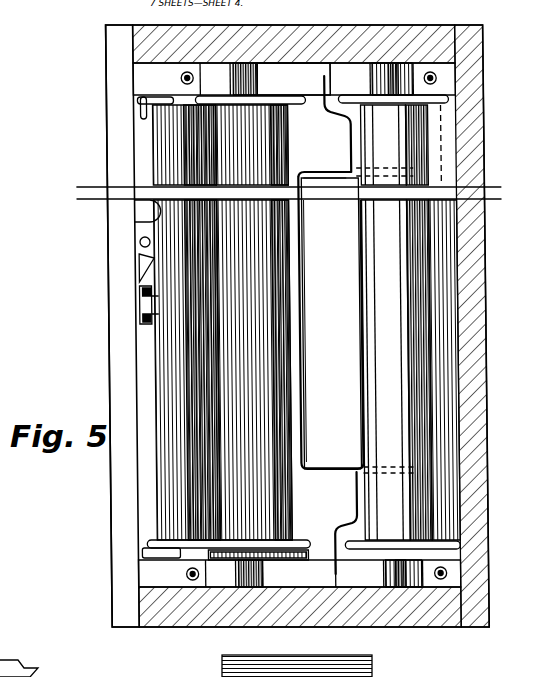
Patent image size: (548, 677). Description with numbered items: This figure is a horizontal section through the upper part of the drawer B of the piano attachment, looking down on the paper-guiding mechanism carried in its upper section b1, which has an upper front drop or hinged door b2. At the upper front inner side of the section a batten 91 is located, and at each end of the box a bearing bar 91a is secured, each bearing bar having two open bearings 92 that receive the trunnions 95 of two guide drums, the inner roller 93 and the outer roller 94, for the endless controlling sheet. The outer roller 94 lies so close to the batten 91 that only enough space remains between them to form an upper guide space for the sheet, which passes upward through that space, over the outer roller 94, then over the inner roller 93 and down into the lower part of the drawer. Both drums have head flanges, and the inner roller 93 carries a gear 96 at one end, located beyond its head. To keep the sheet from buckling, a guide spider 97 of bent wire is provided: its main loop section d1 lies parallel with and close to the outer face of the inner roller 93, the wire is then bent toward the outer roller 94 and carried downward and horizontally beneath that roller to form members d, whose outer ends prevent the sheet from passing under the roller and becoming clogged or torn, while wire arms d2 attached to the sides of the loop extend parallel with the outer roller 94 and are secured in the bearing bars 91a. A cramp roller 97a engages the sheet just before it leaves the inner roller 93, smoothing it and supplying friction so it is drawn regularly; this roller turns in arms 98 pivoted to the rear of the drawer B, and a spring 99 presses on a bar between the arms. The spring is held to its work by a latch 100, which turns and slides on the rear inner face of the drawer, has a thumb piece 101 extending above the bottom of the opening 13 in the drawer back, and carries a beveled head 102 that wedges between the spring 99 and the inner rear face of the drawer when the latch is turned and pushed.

The opening 13 is at (128, 490).
The drawer B is at (483, 308).
The batten 91 is at (432, 322).
The bearing bar 91a is at (296, 325).
The open bearings 92 is at (235, 80).
The inner roller 93 is at (253, 322).
The outer roller 94 is at (385, 322).
The trunnions 95 is at (250, 66).
The gear 96 is at (296, 546).
The guide spider 97 is at (300, 252).
The cramp roller 97a is at (186, 322).
The arms 98 is at (172, 100).
The spring 99 is at (156, 304).
The latch 100 is at (137, 240).
The thumb piece 101 is at (117, 212).
The head 102 is at (136, 268).
The members d is at (394, 466).
The main loop section d1 is at (300, 398).
The arms d2 is at (336, 520).
The upper section b1 is at (232, 626).
The door b2 is at (340, 6).